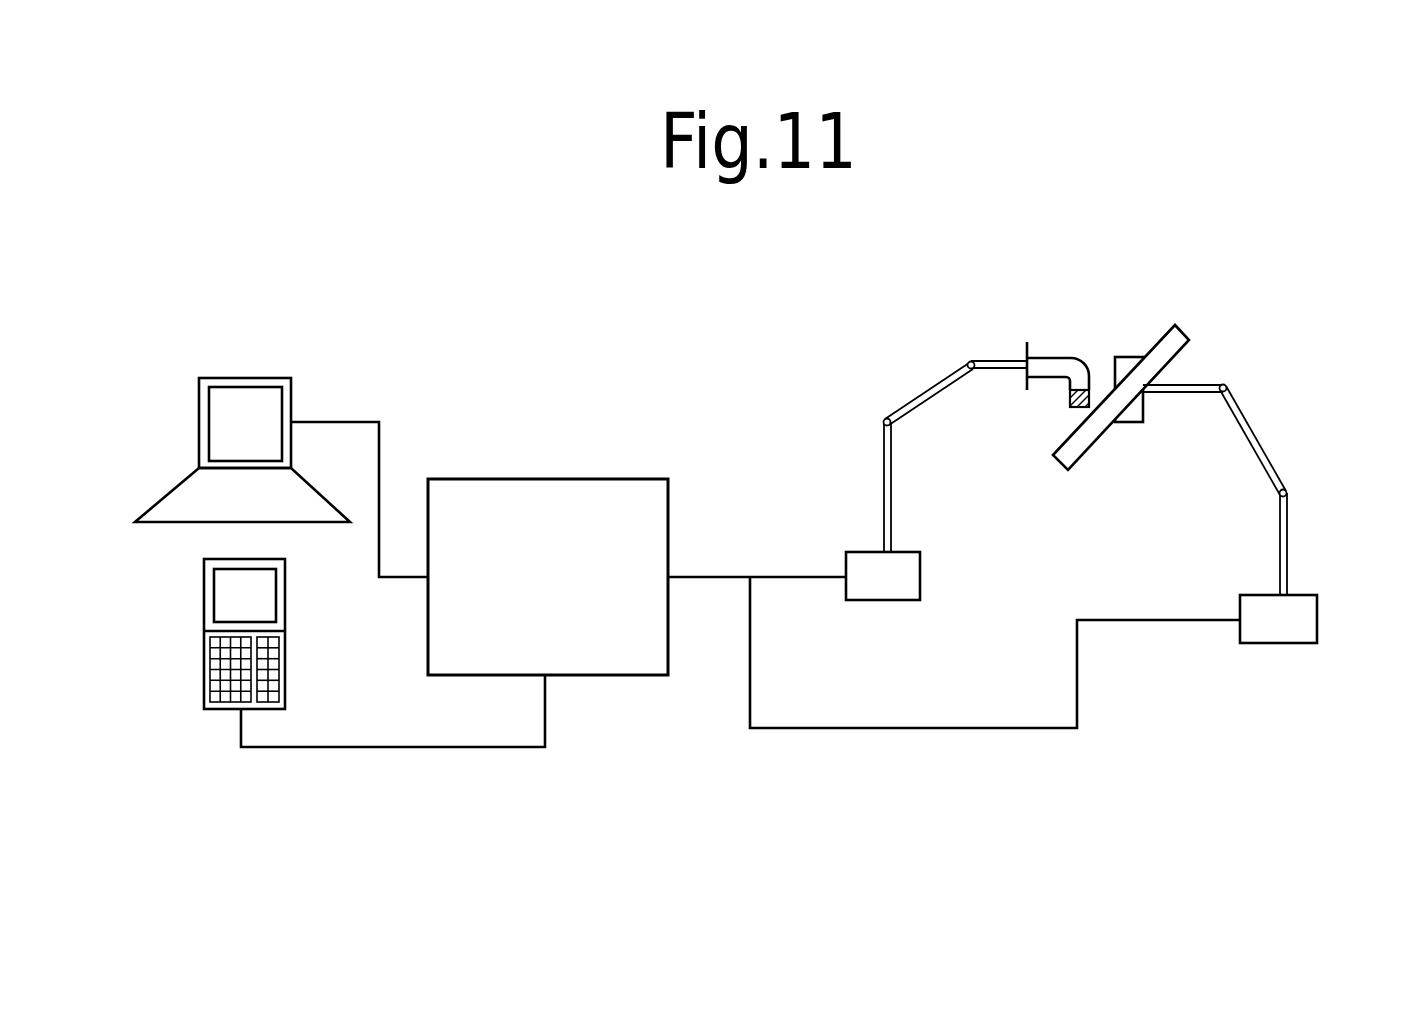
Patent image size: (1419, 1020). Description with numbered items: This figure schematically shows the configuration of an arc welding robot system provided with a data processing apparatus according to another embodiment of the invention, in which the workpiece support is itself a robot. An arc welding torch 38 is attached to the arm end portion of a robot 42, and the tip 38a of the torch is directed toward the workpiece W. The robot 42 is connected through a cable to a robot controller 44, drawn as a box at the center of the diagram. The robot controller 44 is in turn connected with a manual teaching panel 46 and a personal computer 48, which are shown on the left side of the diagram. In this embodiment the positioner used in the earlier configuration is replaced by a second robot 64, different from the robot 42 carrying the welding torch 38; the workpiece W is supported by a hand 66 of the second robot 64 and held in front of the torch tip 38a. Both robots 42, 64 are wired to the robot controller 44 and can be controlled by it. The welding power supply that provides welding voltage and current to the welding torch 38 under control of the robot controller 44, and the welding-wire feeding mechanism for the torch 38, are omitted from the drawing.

The arc welding torch 38 is at (1044, 404).
The nozzle tip 38a is at (1078, 422).
The robot 42 is at (876, 373).
The robot controller 44 is at (610, 479).
The manual teaching panel 46 is at (204, 604).
The personal computer 48 is at (247, 378).
The second robot 64 is at (1330, 473).
The hand 66 is at (1133, 422).
The workpiece W is at (1161, 327).